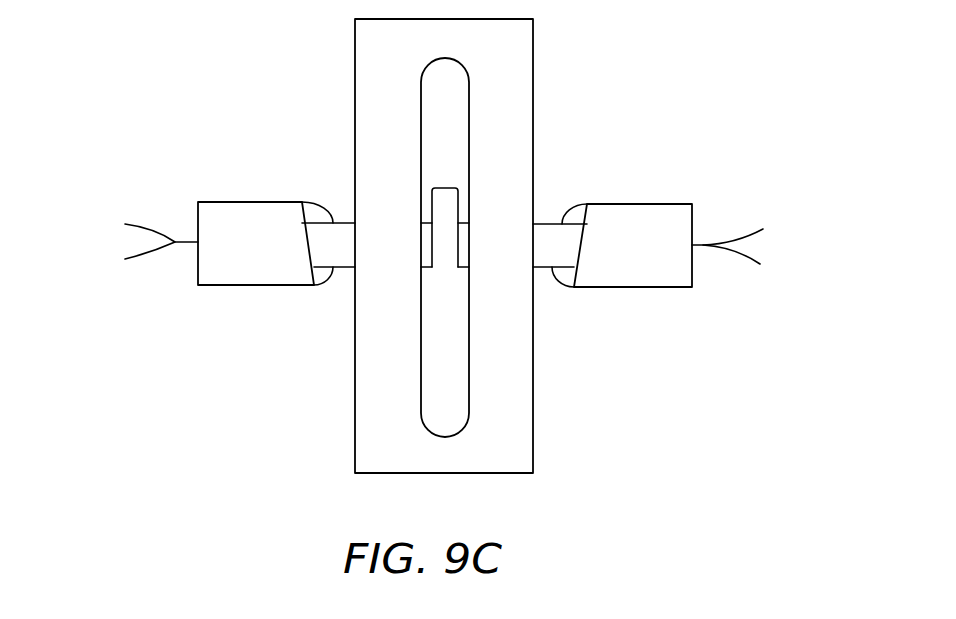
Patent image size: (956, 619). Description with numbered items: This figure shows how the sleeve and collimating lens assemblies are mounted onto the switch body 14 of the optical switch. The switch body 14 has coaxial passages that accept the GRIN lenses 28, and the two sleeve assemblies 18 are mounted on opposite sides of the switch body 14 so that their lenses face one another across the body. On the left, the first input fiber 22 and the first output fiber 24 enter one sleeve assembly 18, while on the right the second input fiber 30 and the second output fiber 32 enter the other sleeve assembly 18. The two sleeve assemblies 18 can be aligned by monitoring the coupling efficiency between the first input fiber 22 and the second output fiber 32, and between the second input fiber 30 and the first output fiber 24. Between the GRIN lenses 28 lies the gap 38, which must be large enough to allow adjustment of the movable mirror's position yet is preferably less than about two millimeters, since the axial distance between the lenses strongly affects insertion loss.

The switch body 14 is at (352, 423).
The sleeve assembly 18 is at (243, 170).
The first input fiber 22 is at (128, 225).
The first output fiber 24 is at (141, 257).
The GRIN lens 28 is at (345, 260).
The second input fiber 30 is at (750, 229).
The second output fiber 32 is at (760, 263).
The gap 38 is at (443, 186).